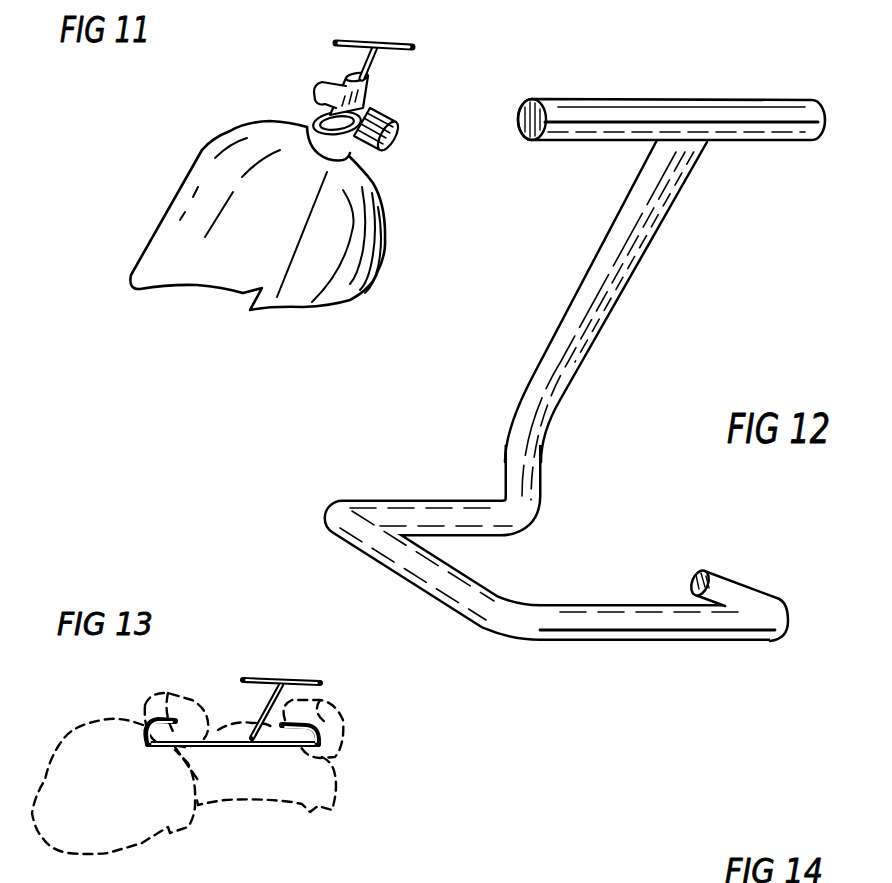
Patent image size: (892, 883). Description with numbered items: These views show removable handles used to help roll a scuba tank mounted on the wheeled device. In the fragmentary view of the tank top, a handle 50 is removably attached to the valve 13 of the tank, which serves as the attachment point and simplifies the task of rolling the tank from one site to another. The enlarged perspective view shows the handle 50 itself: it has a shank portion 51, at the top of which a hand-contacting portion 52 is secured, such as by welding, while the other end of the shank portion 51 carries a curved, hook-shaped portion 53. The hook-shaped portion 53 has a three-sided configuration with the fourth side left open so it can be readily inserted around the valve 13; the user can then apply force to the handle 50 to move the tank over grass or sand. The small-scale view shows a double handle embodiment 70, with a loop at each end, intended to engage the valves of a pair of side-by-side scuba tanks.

In FIG. 11, the valve 13 is at (319, 89).
In FIG. 11, the handle 50 is at (378, 70).
In FIG. 12, the handle 50 is at (582, 374).
In FIG. 12, the shank portion 51 is at (588, 280).
In FIG. 12, the hand-contacting portion 52 is at (775, 112).
In FIG. 12, the hook-shaped portion 53 is at (648, 598).
In FIG. 13, the handle embodiment 70 is at (240, 715).